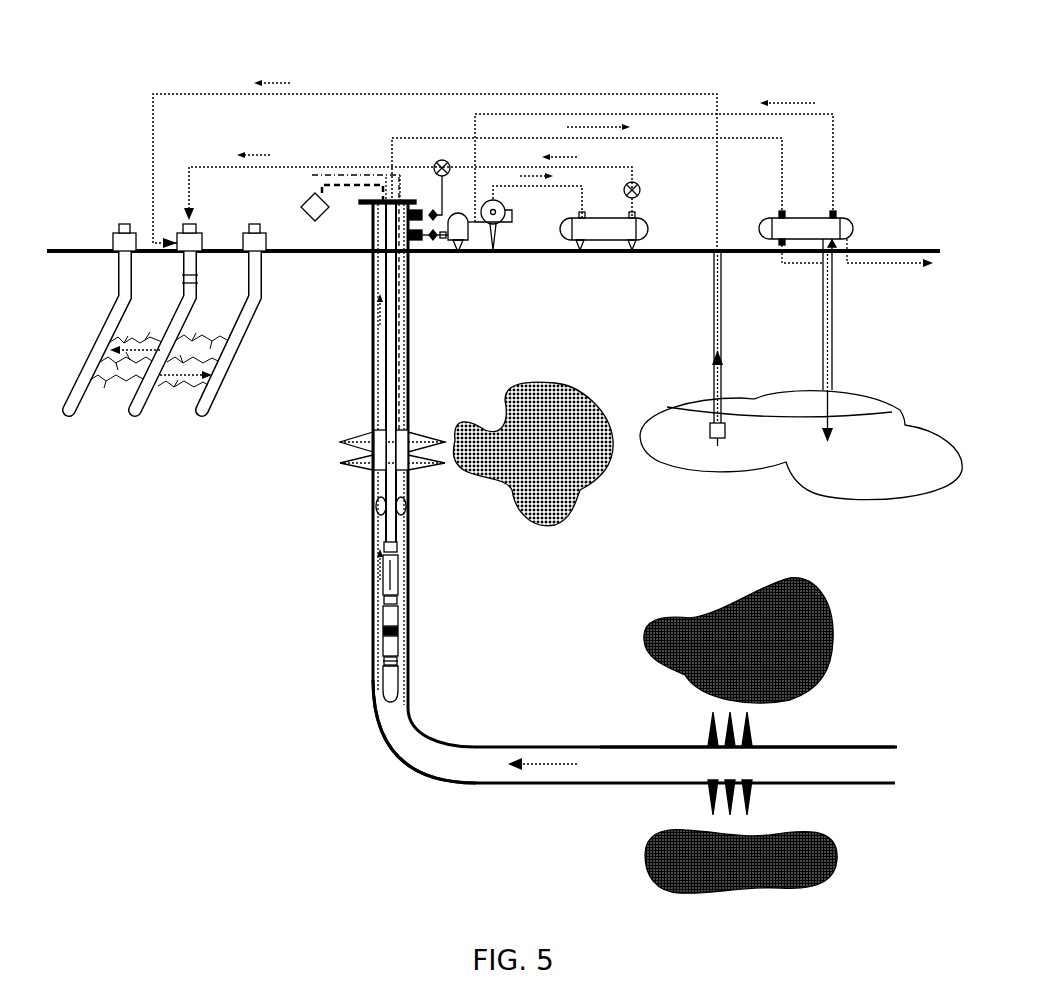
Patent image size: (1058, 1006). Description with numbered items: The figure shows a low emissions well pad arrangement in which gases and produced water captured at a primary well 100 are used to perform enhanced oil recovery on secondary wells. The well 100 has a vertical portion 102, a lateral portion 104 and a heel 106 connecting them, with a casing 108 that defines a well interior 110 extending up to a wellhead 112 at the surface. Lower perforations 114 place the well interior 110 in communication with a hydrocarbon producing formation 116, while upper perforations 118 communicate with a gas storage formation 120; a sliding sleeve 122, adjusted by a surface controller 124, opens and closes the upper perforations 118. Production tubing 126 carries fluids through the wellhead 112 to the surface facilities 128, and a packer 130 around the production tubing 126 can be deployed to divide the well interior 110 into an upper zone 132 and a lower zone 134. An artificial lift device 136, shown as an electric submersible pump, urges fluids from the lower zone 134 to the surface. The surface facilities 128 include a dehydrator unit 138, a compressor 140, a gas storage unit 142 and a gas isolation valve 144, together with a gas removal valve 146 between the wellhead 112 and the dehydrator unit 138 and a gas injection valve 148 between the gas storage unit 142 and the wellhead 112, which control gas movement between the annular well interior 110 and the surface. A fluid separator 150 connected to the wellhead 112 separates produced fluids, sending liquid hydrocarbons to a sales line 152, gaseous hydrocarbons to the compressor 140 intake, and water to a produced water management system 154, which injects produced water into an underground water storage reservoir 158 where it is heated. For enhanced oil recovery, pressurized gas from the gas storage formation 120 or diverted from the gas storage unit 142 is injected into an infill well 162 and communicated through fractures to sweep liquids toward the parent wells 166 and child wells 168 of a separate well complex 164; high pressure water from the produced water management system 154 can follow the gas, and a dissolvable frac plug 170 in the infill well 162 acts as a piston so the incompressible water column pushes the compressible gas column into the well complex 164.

The well 100 is at (497, 616).
The vertical portion 102 is at (373, 272).
The lateral portion 104 is at (646, 746).
The heel 106 is at (400, 757).
The casing 108 is at (410, 580).
The well interior 110 is at (400, 533).
The wellhead 112 is at (382, 200).
The lower perforations 114 is at (752, 745).
The hydrocarbon producing formation 116 is at (737, 666).
The upper perforations 118 is at (360, 463).
The gas storage formation 120 is at (526, 456).
The sliding sleeve 122 is at (372, 420).
The controller 124 is at (308, 200).
The production tubing 126 is at (398, 374).
The surface facilities 128 is at (537, 68).
The packer 130 is at (378, 510).
The upper zone 132 is at (373, 330).
The lower zone 134 is at (380, 585).
The artificial lift device 136 is at (383, 662).
The dehydrator unit 138 is at (463, 245).
The compressor 140 is at (498, 225).
The gas storage unit 142 is at (600, 242).
The gas isolation valve 144 is at (637, 198).
The gas removal valve 146 is at (434, 240).
The gas injection valve 148 is at (433, 210).
The fluid separator 150 is at (847, 218).
The sales line 152 is at (890, 265).
The produced water management system 154 is at (805, 263).
The water storage reservoir 158 is at (872, 469).
The infill well 162 is at (130, 420).
The well complex 164 is at (160, 468).
The parent wells 166 is at (200, 418).
The child wells 168 is at (66, 418).
The dissolvable frac plug 170 is at (182, 278).